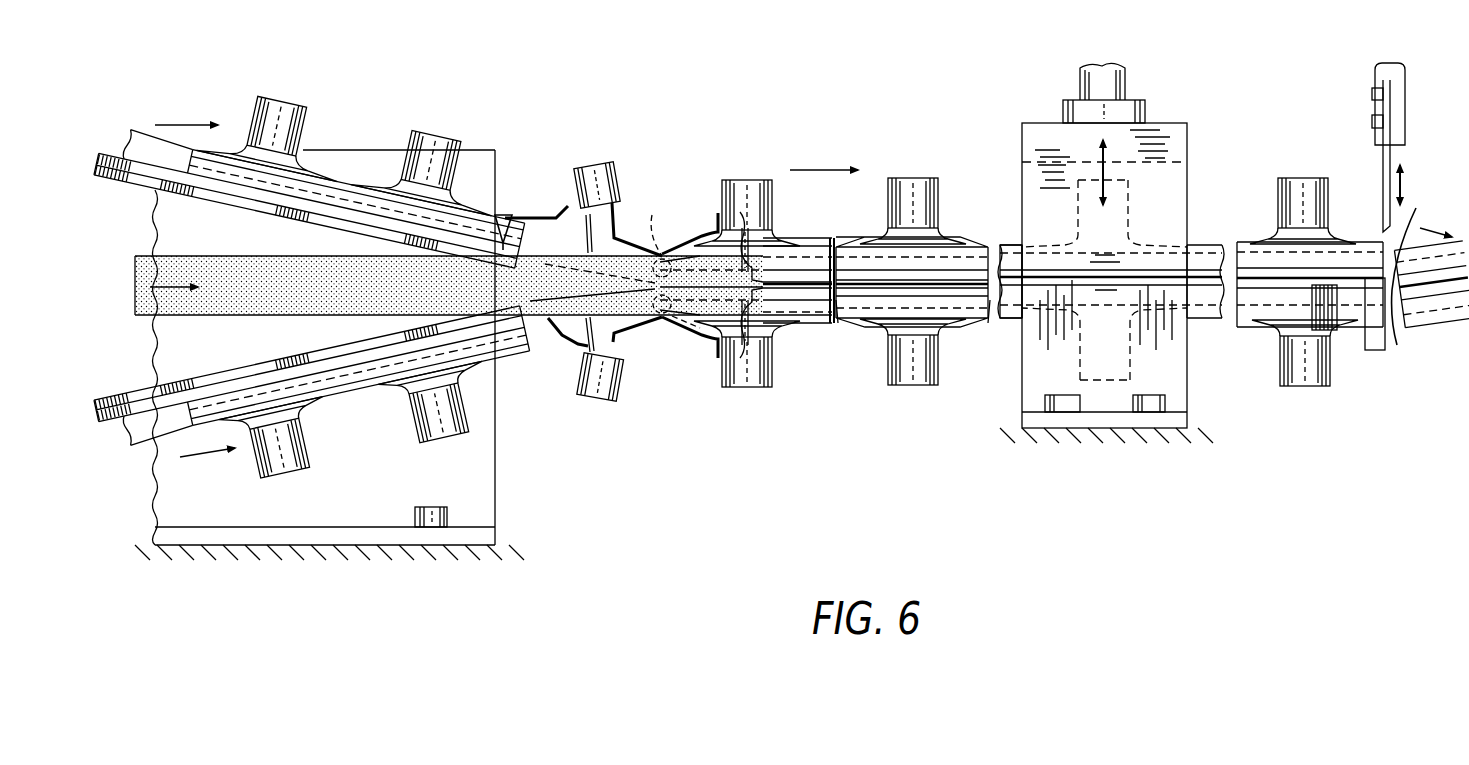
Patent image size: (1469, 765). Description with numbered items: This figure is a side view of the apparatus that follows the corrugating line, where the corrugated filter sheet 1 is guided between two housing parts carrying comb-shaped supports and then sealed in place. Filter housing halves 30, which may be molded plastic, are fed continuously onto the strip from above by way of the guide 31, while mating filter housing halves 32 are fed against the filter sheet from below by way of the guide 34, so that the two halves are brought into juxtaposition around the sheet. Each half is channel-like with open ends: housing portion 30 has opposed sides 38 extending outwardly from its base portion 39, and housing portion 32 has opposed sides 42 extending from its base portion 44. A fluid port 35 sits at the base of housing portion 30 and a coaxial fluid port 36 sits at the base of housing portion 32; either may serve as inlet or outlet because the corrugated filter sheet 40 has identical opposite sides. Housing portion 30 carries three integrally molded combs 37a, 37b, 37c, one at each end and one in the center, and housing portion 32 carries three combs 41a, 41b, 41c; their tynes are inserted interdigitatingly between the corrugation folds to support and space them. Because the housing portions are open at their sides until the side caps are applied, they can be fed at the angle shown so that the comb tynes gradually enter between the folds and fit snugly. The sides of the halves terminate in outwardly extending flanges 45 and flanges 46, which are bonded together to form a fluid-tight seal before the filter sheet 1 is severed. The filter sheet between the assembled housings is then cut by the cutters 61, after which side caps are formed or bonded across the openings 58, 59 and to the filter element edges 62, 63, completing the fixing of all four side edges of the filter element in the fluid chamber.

The filter sheet 1 is at (214, 308).
The filter housing half 30 is at (247, 105).
The guide 31 is at (140, 190).
The mating filter housing half 32 is at (298, 472).
The guide 34 is at (131, 422).
The fluid port 35 is at (912, 180).
The fluid port 36 is at (911, 388).
The comb 37a is at (522, 213).
The comb 37b is at (588, 178).
The comb 37c is at (650, 235).
The side 38 is at (370, 200).
The base portion 39 is at (958, 240).
The corrugated filter sheet 40 is at (698, 262).
The comb 41a is at (686, 322).
The comb 41b is at (602, 402).
The comb 41c is at (668, 322).
The side 42 is at (386, 370).
The base portion 44 is at (962, 325).
The flange 45 is at (798, 280).
The flange 46 is at (798, 300).
The opening 58 is at (823, 262).
The opening 59 is at (826, 305).
The cutter 61 is at (1378, 185).
The filter element edge 62 is at (1396, 332).
The filter element edge 63 is at (1417, 260).